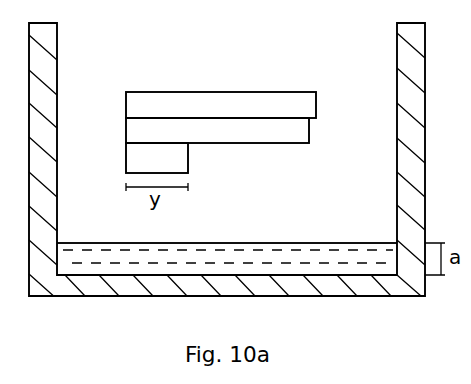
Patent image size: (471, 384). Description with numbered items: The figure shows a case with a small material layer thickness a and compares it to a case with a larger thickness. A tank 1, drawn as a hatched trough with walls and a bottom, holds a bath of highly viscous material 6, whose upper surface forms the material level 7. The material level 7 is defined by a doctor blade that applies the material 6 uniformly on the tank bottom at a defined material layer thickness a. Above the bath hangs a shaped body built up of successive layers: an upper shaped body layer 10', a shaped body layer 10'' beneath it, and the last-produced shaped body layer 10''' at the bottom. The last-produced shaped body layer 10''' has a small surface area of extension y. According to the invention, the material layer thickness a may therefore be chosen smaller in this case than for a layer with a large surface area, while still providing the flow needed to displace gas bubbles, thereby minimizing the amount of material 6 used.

The tank 1 is at (418, 38).
The highly viscous material 6 is at (110, 253).
The material level 7 is at (138, 242).
The shaped body layer 10' is at (248, 98).
The shaped body layer 10'' is at (249, 130).
The last-produced shaped body layer 10''' is at (194, 161).